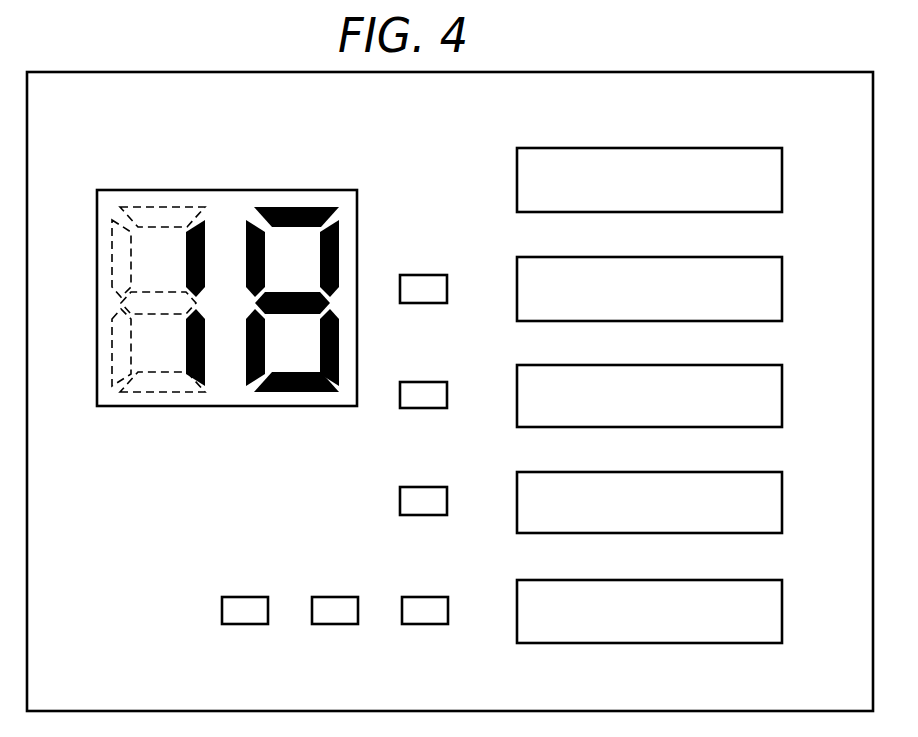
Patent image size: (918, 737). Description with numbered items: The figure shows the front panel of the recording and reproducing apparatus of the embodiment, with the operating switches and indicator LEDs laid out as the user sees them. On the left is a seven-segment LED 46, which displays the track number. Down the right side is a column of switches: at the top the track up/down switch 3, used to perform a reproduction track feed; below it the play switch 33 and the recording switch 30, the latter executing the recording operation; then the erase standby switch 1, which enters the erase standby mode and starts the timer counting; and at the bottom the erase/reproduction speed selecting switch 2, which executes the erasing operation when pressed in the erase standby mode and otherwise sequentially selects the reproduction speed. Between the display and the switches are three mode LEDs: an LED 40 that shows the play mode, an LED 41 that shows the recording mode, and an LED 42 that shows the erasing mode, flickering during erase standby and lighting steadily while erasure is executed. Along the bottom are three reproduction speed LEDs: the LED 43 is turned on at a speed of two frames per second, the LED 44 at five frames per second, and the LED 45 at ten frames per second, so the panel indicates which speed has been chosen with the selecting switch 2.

The seven-segment LED 46 is at (245, 190).
The track up/down switch 3 is at (782, 170).
The play switch 33 is at (783, 292).
The recording switch 30 is at (784, 403).
The erase standby switch 1 is at (784, 501).
The erase/reproduction speed selecting switch 2 is at (784, 607).
The LED 40 is at (448, 289).
The LED 41 is at (447, 396).
The LED 42 is at (448, 503).
The LED 43 is at (253, 597).
The LED 44 is at (345, 597).
The LED 45 is at (432, 597).